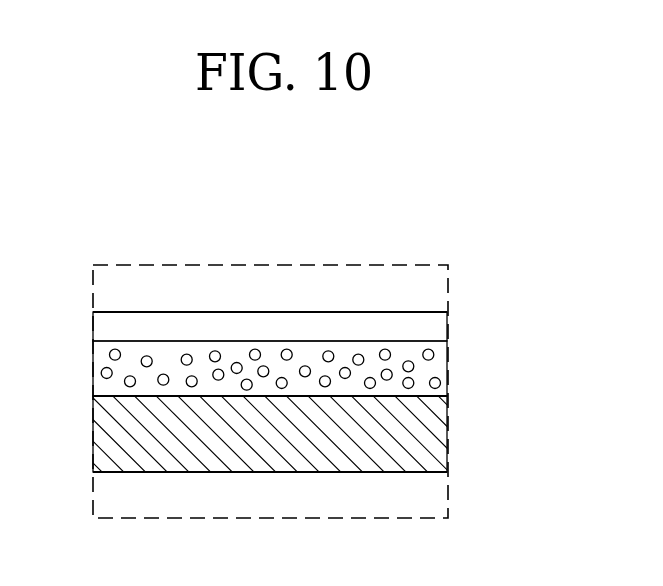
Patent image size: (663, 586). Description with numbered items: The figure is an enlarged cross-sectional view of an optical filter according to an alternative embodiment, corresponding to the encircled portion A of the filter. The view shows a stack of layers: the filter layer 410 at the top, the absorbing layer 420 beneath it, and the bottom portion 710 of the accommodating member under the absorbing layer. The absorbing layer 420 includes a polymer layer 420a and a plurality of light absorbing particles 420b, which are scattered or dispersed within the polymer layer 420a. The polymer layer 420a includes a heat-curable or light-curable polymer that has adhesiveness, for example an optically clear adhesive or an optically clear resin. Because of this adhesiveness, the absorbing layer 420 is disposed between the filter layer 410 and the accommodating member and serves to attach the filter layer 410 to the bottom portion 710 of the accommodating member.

The filter layer 410 is at (433, 325).
The absorbing layer 420 is at (347, 373).
The polymer layer 420a is at (435, 370).
The light absorbing particles 420b is at (434, 354).
The bottom portion 710 is at (427, 423).
The encircled portion A is at (447, 220).